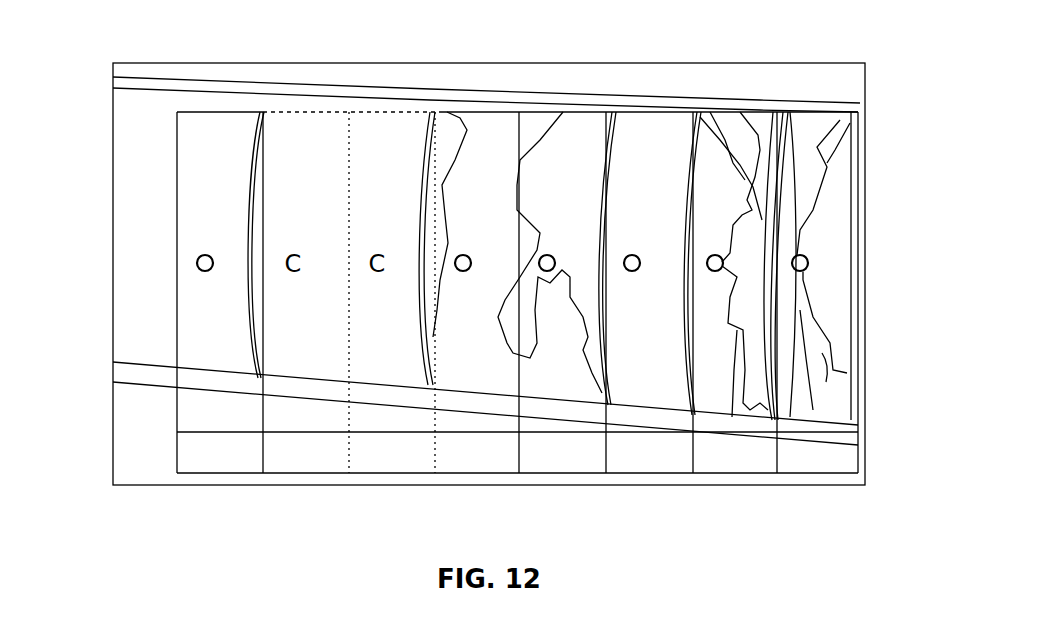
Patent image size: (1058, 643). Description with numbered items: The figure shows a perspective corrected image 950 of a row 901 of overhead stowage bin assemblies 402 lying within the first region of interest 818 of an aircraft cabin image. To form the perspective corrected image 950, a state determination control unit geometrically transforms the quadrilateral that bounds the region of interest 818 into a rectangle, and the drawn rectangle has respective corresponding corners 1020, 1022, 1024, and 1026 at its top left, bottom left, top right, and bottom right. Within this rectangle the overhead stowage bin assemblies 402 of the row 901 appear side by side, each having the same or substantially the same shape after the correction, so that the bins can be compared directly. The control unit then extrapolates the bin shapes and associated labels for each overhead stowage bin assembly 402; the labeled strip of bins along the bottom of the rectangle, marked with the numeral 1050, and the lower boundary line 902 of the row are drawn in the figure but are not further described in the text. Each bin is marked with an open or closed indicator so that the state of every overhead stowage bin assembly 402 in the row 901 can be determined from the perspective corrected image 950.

The first region of interest 818 is at (98, 239).
The overhead stowage bin assemblies 402 is at (410, 120).
The perspective corrected image 950 is at (904, 232).
The row 901 is at (902, 327).
The lower boundary line 902 is at (858, 445).
The corner 1020 is at (195, 112).
The corner 1022 is at (182, 473).
The corner 1024 is at (857, 110).
The corner 1026 is at (862, 457).
The radial bin 1050 is at (393, 473).